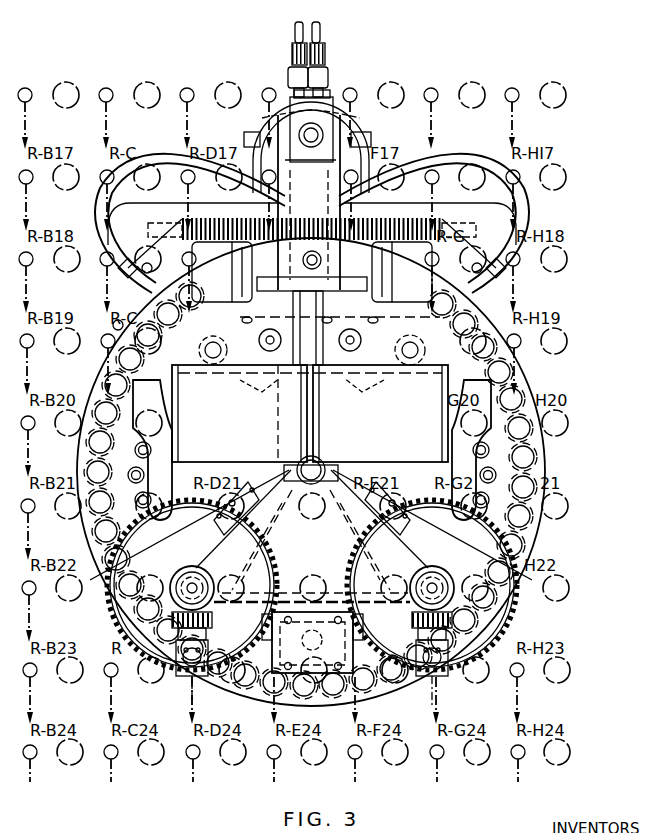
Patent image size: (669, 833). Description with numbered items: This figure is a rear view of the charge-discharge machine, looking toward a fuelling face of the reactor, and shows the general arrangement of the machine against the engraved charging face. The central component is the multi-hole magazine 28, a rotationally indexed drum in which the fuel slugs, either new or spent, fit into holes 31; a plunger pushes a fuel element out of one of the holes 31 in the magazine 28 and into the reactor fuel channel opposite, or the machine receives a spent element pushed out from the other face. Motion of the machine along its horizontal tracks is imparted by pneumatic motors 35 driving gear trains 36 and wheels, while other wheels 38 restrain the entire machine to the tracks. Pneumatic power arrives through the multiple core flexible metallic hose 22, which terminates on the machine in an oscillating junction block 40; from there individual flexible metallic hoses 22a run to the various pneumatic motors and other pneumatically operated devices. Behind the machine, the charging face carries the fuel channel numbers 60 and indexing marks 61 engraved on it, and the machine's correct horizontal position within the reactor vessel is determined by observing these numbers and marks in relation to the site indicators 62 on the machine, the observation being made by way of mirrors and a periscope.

The multiple core flexible metallic hose 22 is at (316, 30).
The individual flexible metallic hoses 22a is at (142, 152).
The oscillating junction block 40 is at (296, 100).
The wheels 38 is at (115, 330).
The site indicators 62 is at (258, 382).
The holes 31 is at (518, 390).
The multi-hole magazine 28 is at (545, 455).
The pneumatic motors 35 is at (108, 586).
The gear trains 36 is at (156, 671).
The fuel channel numbers 60 is at (562, 630).
The indexing marks 61 is at (519, 703).